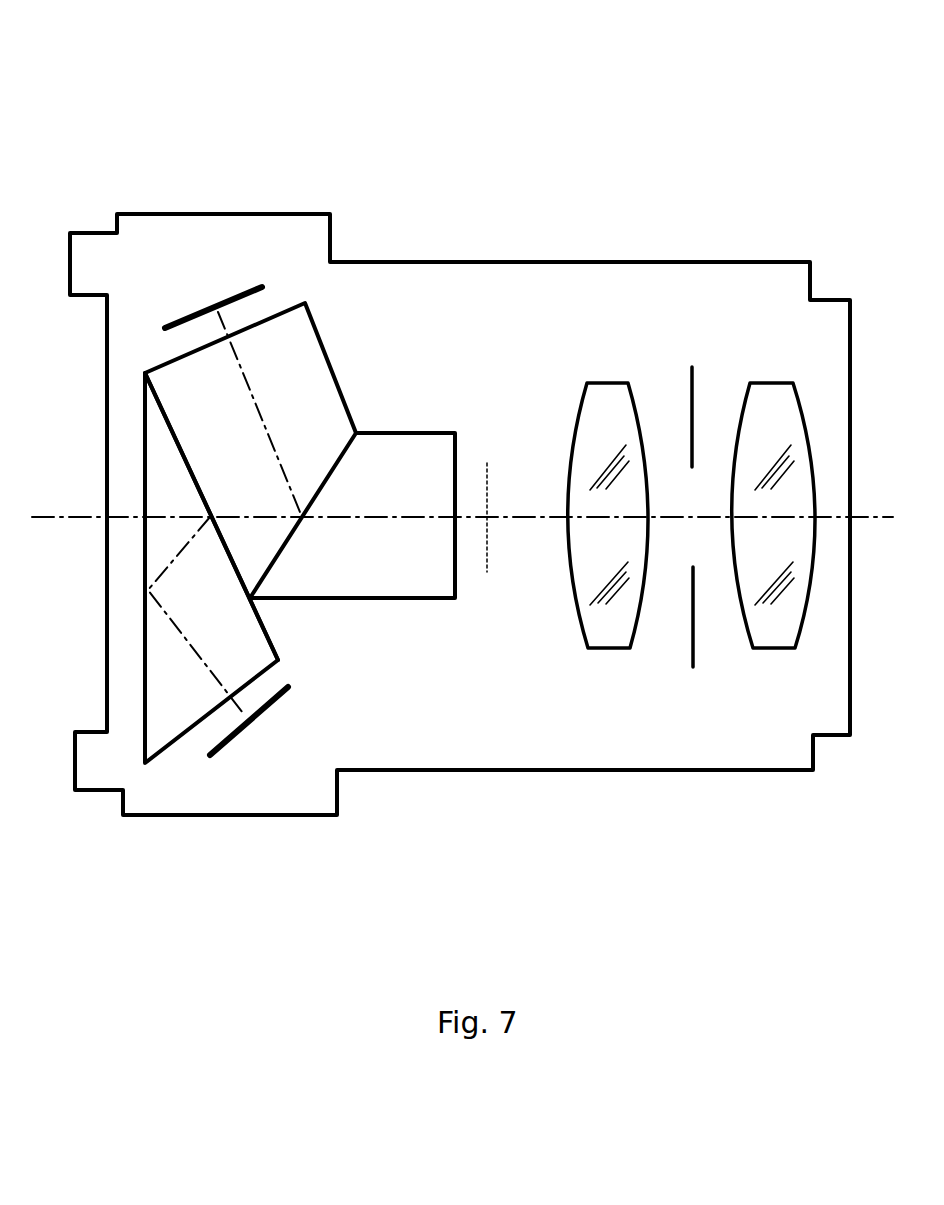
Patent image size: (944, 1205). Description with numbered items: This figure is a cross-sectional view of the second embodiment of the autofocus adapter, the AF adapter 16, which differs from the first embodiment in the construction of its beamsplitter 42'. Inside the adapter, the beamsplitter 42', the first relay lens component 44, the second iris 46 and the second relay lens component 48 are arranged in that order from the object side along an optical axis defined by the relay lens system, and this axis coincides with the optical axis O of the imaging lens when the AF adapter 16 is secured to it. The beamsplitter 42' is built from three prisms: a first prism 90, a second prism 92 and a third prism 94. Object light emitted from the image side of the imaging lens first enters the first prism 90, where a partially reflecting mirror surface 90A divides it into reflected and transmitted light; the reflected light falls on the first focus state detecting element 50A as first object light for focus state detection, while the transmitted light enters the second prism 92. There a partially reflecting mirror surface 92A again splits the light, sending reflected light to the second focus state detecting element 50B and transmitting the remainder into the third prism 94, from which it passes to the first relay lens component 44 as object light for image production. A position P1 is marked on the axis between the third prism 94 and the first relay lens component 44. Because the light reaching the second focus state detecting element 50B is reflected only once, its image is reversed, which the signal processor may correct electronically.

The AF adapter 16 is at (755, 168).
The beamsplitter 42' is at (75, 515).
The optical axis O is at (68, 512).
The first prism 90 is at (157, 640).
The partially reflecting mirror surface 90A is at (222, 553).
The second prism 92 is at (323, 382).
The partially reflecting mirror surface 92A is at (330, 470).
The third prism 94 is at (448, 450).
The image plane position P1 is at (488, 582).
The second focus state detecting element 50B is at (178, 322).
The first focus state detecting element 50A is at (258, 714).
The first relay lens component 44 is at (606, 401).
The second iris 46 is at (692, 367).
The second relay lens component 48 is at (776, 401).